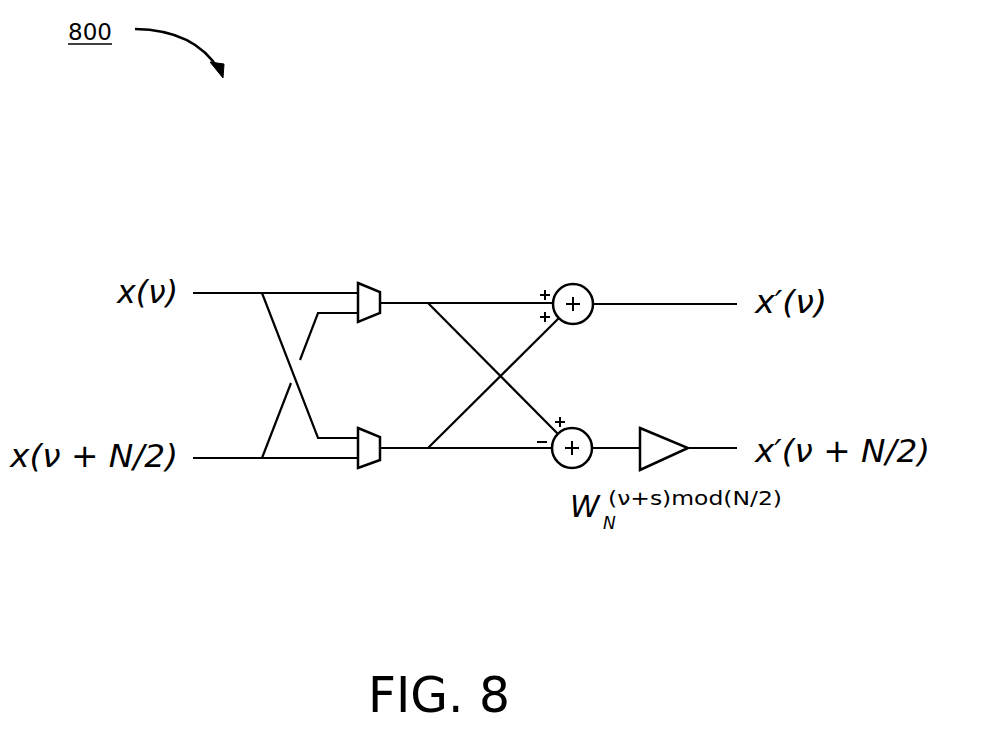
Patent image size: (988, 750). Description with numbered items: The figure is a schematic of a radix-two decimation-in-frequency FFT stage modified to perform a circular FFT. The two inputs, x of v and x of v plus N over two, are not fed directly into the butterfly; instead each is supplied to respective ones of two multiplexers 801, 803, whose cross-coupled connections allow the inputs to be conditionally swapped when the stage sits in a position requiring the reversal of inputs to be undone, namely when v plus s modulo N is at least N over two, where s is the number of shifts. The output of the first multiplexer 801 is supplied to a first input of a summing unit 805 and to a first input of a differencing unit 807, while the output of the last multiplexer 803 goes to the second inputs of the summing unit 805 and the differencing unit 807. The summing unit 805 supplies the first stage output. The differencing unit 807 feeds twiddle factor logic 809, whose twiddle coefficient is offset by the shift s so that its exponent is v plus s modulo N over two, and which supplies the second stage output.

The first multiplexer 801 is at (360, 283).
The last multiplexer 803 is at (360, 428).
The summing unit 805 is at (573, 284).
The differencing unit 807 is at (572, 428).
The twiddle factor logic 809 is at (665, 437).